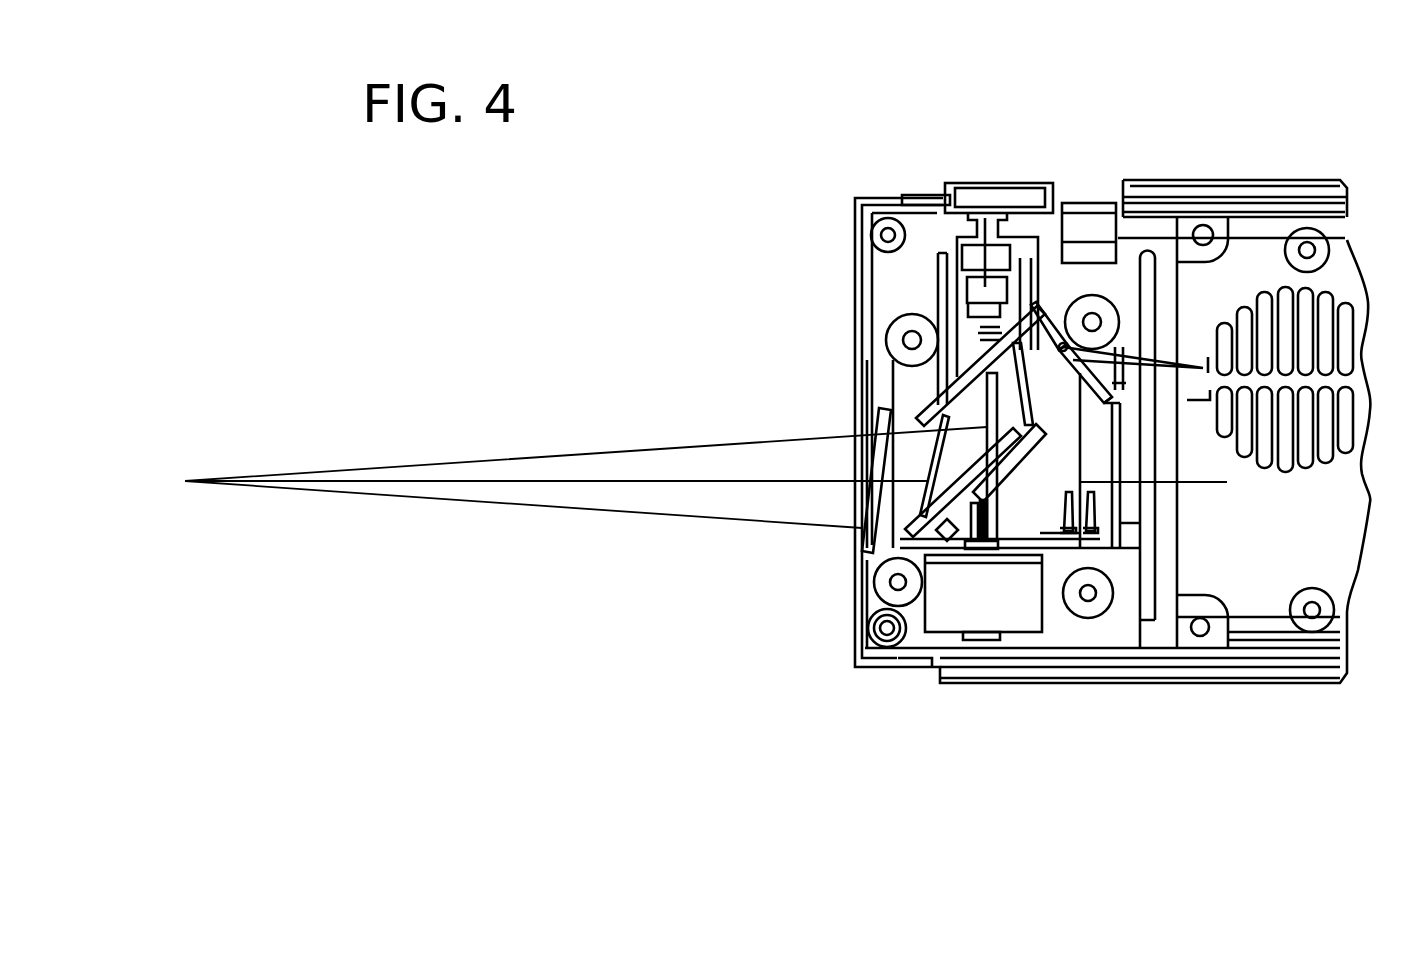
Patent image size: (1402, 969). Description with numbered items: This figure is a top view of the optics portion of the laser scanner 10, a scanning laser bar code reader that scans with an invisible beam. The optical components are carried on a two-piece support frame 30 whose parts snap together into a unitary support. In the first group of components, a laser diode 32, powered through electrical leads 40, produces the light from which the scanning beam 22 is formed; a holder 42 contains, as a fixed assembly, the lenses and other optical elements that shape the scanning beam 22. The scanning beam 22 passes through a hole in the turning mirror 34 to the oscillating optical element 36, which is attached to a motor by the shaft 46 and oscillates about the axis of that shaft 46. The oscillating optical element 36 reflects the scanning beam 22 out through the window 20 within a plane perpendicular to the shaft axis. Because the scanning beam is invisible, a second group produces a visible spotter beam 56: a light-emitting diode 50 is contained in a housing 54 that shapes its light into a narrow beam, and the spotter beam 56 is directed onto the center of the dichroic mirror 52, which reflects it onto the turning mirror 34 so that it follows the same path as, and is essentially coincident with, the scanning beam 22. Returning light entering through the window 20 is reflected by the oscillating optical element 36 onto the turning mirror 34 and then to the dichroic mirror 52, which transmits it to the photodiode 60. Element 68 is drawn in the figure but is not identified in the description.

The optical apparatus 10 is at (864, 716).
The lever 20 is at (872, 455).
The light beam 22 is at (993, 412).
The housing cover 30 is at (1198, 657).
The guide channel 32 is at (940, 305).
The pivot arm 34 is at (930, 397).
The mirror 36 is at (1025, 480).
The push button 40 is at (966, 215).
The button tab 42 is at (940, 263).
The light source stem 46 is at (992, 500).
The pivot boss 50 is at (1082, 560).
The slide plate 52 is at (1118, 443).
The guide bar 54 is at (1130, 517).
The mirror element 56 is at (1033, 316).
The output window 60 is at (1160, 370).
The tilted arm 68 is at (1120, 383).